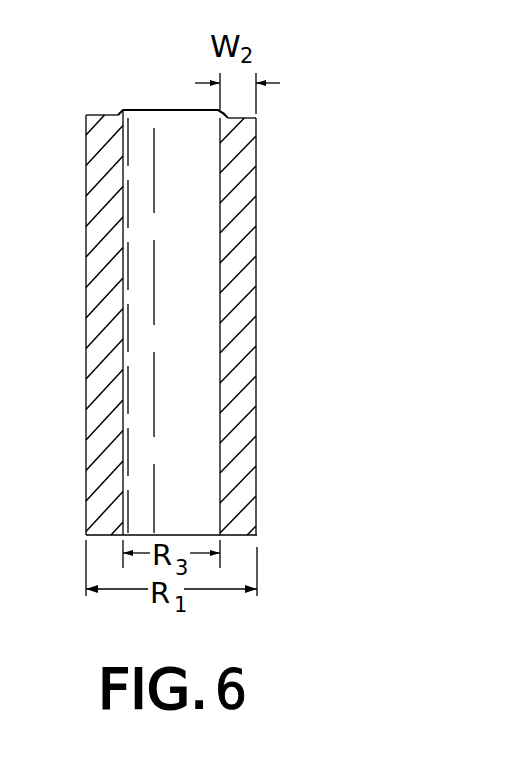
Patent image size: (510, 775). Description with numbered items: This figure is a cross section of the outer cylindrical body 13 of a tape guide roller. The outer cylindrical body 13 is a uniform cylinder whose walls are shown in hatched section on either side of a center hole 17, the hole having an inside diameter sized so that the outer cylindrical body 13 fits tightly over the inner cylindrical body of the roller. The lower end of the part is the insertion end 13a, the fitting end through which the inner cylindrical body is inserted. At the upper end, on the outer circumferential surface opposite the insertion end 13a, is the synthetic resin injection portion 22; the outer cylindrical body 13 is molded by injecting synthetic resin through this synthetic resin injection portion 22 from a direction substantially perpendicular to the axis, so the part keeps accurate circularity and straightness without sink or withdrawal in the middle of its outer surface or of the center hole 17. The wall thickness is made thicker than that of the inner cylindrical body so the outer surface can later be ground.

The outer cylindrical body 13 is at (256, 200).
The insertion end 13a is at (116, 530).
The center hole 17 is at (227, 305).
The synthetic resin injection portion 22 is at (121, 113).